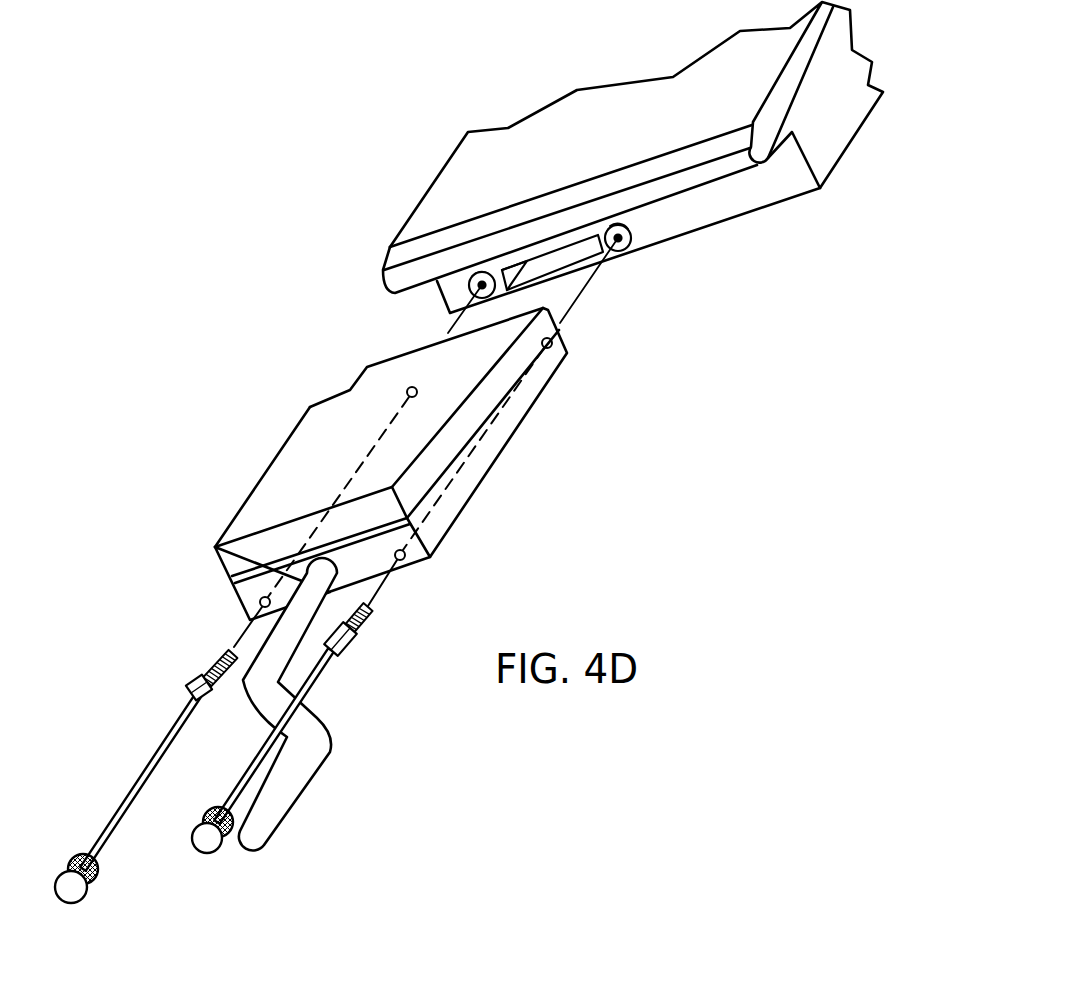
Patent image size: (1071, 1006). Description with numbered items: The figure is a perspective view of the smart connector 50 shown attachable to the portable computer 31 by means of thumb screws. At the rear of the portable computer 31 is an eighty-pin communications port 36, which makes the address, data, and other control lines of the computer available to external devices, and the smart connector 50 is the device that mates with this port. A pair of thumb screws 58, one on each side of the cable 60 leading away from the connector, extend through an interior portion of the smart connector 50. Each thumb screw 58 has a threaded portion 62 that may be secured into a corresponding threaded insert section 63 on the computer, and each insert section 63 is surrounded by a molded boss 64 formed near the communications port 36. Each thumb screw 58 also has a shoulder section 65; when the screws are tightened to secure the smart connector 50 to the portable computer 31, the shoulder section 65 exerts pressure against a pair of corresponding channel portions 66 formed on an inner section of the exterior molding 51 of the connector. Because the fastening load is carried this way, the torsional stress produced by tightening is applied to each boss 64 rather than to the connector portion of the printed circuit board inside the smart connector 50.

The portable computer 31 is at (587, 62).
The communications port 36 is at (551, 261).
The smart connector 50 is at (536, 452).
The exterior molding 51 is at (253, 485).
The thumb screw 58 is at (198, 821).
The cable 60 is at (285, 790).
The threaded portion 62 is at (218, 663).
The threaded insert section 63 is at (621, 246).
The molded boss 64 is at (630, 229).
The shoulder section 65 is at (191, 688).
The channel portion 66 is at (406, 389).